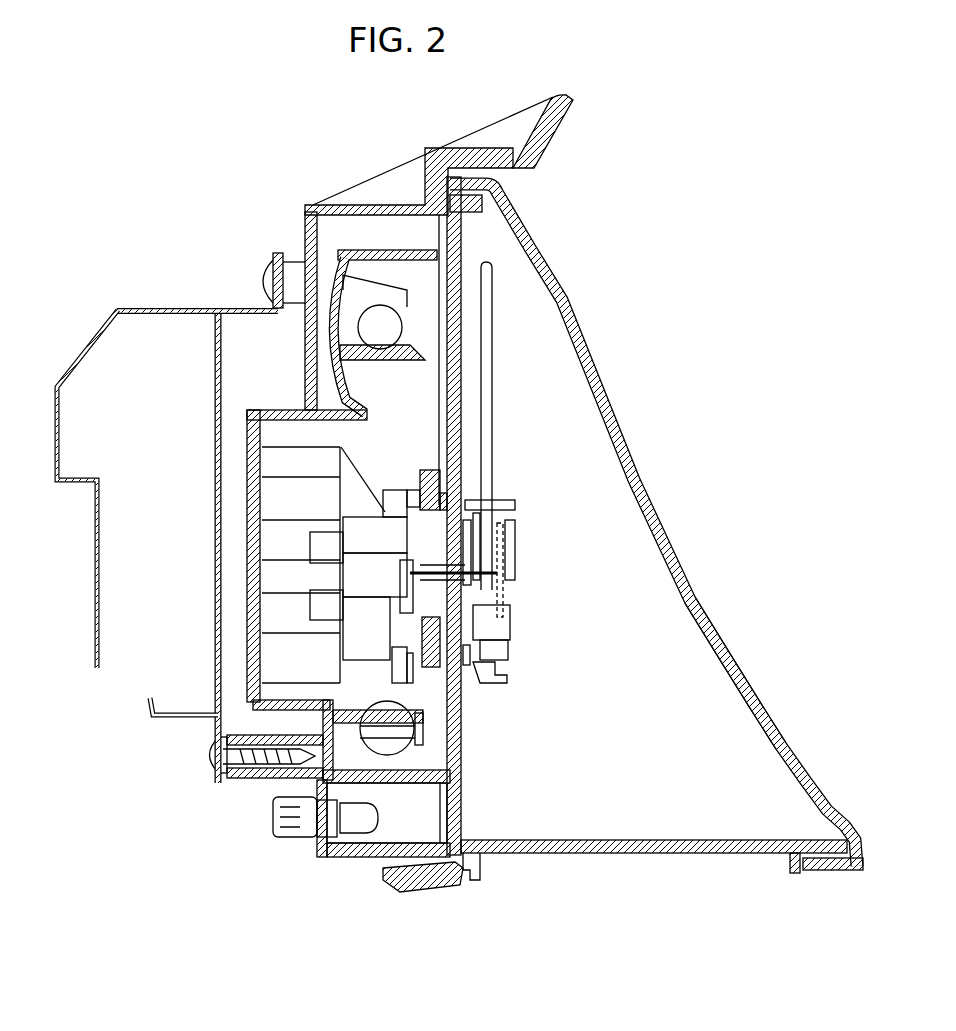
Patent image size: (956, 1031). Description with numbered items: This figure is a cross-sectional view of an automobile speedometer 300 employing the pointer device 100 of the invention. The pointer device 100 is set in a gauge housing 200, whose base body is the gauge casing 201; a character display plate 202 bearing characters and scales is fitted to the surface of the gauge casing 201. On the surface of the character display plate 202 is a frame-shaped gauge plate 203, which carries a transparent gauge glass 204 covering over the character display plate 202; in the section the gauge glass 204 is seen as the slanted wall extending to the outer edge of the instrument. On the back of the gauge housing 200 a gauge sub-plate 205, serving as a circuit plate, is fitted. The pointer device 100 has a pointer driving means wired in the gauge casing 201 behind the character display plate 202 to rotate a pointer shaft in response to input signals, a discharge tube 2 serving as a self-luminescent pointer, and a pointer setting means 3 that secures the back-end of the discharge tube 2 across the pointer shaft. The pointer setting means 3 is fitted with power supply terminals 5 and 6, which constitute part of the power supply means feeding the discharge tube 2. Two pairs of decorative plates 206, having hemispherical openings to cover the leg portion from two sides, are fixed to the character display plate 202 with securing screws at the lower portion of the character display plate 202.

The gauge housing 200 is at (303, 179).
The automobile speedometer 300 is at (641, 232).
The discharge tube 2 is at (494, 324).
The decorative plates 206 is at (432, 476).
The power supply terminal 6 is at (481, 522).
The pointer device 100 is at (517, 550).
The pointer setting means 3 is at (517, 605).
The gauge glass 204 is at (741, 658).
The gauge sub-plate 205 is at (213, 638).
The gauge casing 201 is at (243, 780).
The gauge plate 203 is at (490, 857).
The character display plate 202 is at (466, 786).
The power supply terminal 5 is at (500, 675).